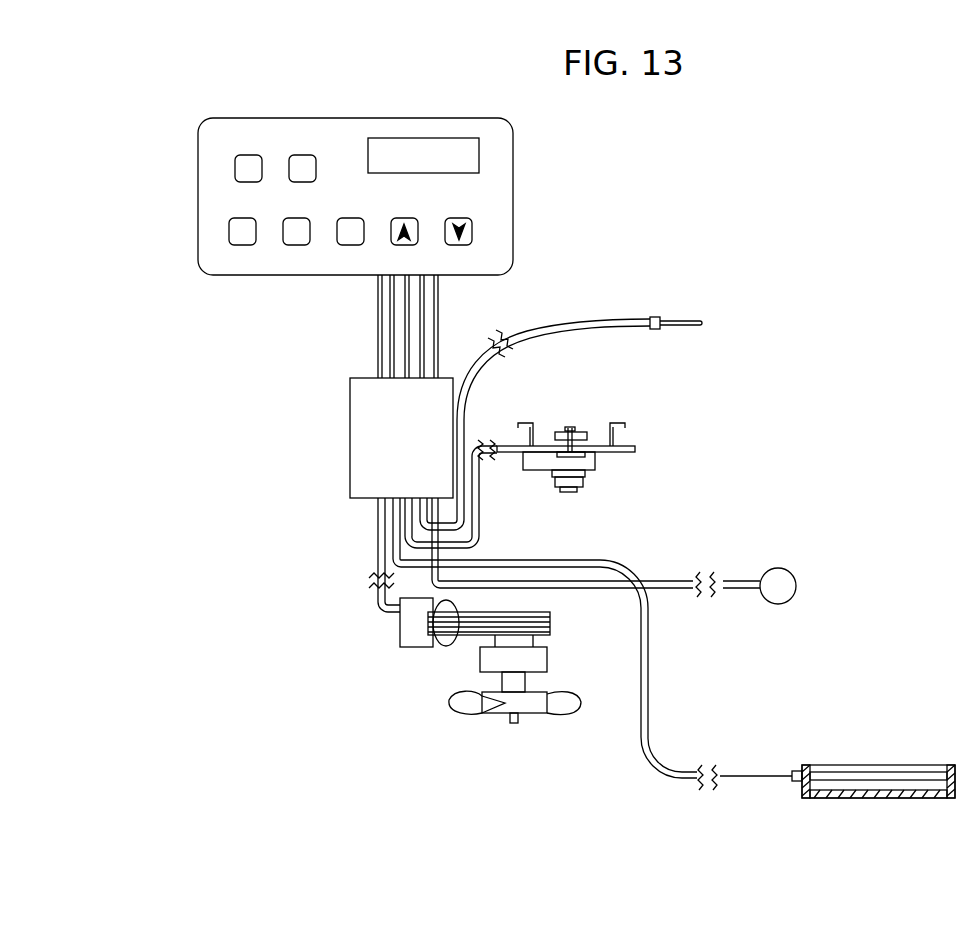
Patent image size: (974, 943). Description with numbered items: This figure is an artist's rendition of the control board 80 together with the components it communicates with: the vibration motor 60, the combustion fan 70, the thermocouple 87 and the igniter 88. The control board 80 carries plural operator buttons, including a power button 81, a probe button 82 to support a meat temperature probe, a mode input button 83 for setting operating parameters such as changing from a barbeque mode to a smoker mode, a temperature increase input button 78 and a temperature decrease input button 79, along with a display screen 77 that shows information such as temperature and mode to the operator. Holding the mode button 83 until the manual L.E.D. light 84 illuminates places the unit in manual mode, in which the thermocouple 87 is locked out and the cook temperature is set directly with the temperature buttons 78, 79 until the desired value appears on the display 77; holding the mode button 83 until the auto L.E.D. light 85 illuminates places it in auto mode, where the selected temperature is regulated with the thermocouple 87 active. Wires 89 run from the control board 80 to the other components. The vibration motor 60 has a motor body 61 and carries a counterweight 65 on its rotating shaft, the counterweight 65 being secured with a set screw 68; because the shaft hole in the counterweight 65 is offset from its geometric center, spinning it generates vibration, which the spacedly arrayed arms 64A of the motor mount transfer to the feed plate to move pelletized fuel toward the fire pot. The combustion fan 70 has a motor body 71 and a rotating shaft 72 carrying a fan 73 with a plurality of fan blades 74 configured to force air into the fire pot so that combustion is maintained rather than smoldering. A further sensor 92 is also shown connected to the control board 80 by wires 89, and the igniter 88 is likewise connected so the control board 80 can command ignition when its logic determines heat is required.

The control board 80 is at (341, 182).
The display screen 77 is at (378, 142).
The manual L.E.D. light 84 is at (238, 170).
The auto L.E.D. light 85 is at (305, 168).
The power button 81 is at (237, 235).
The probe button 82 is at (293, 245).
The mode input button 83 is at (350, 245).
The temperature increase input button 78 is at (405, 245).
The temperature decrease input button 79 is at (463, 219).
The wires 89 is at (395, 348).
The thermocouple 87 is at (673, 321).
The vibration motor 60 is at (596, 462).
The motor body 61 is at (532, 469).
The counterweight 65 is at (562, 432).
The set screw 68 is at (578, 435).
The arms 64A is at (624, 428).
The combustion fan 70 is at (493, 680).
The motor body 71 is at (488, 667).
The rotating shaft 72 is at (515, 724).
The fan 73 is at (530, 708).
The fan blades 74 is at (460, 708).
The sensor 92 is at (778, 574).
The igniter 88 is at (855, 777).